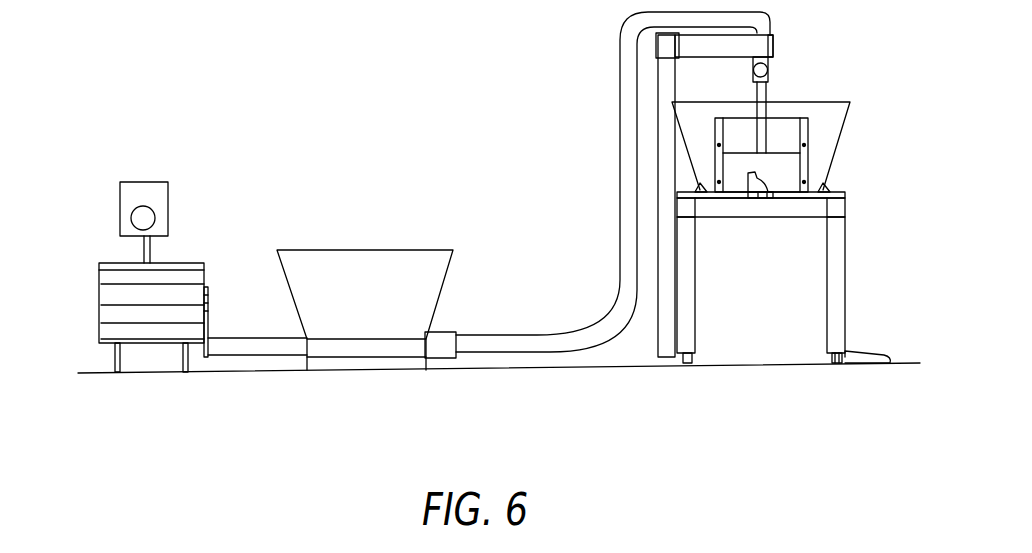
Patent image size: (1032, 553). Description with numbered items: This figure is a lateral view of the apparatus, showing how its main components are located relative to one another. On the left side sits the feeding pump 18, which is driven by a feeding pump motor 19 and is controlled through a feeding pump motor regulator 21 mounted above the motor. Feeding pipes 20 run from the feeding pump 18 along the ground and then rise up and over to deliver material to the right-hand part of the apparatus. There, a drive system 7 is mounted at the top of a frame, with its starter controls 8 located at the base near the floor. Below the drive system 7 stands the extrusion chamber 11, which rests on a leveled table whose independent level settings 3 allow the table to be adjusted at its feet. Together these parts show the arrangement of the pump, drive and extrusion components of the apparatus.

The independent level settings 3 is at (838, 364).
The drive system 7 is at (770, 75).
The starter controls for the drive system 8 is at (873, 353).
The extrusion chamber 11 is at (825, 130).
The feeding pump 18 is at (368, 307).
The feeding pump motor 19 is at (110, 316).
The feeding pipes 20 is at (537, 343).
The feeding pump motor regulator 21 is at (143, 206).